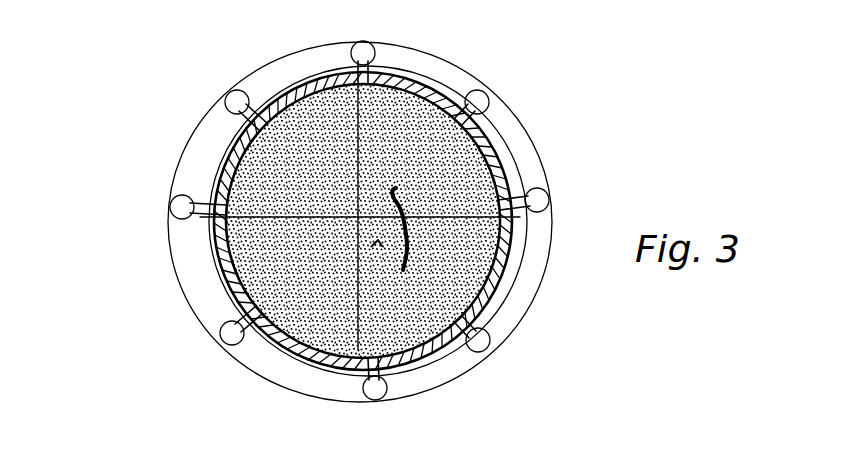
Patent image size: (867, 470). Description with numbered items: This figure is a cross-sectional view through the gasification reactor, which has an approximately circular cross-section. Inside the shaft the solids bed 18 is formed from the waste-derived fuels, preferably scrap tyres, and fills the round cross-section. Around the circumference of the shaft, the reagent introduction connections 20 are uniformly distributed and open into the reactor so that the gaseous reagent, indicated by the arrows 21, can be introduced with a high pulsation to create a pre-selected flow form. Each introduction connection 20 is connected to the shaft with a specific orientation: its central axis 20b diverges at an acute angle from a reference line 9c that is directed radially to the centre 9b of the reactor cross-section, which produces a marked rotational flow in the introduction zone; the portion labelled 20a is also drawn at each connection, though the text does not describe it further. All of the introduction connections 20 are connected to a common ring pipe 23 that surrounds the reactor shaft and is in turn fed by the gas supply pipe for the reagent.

The solids bed 18 is at (400, 282).
The reagent introduction connections 20 is at (225, 313).
The outer ring band 20a is at (485, 122).
The central axis 20b is at (488, 312).
The gaseous reagent 21 is at (262, 112).
The ring pipe 23 is at (181, 149).
The centre of the reactor cross-section 9b is at (357, 204).
The reference line 9c is at (389, 218).